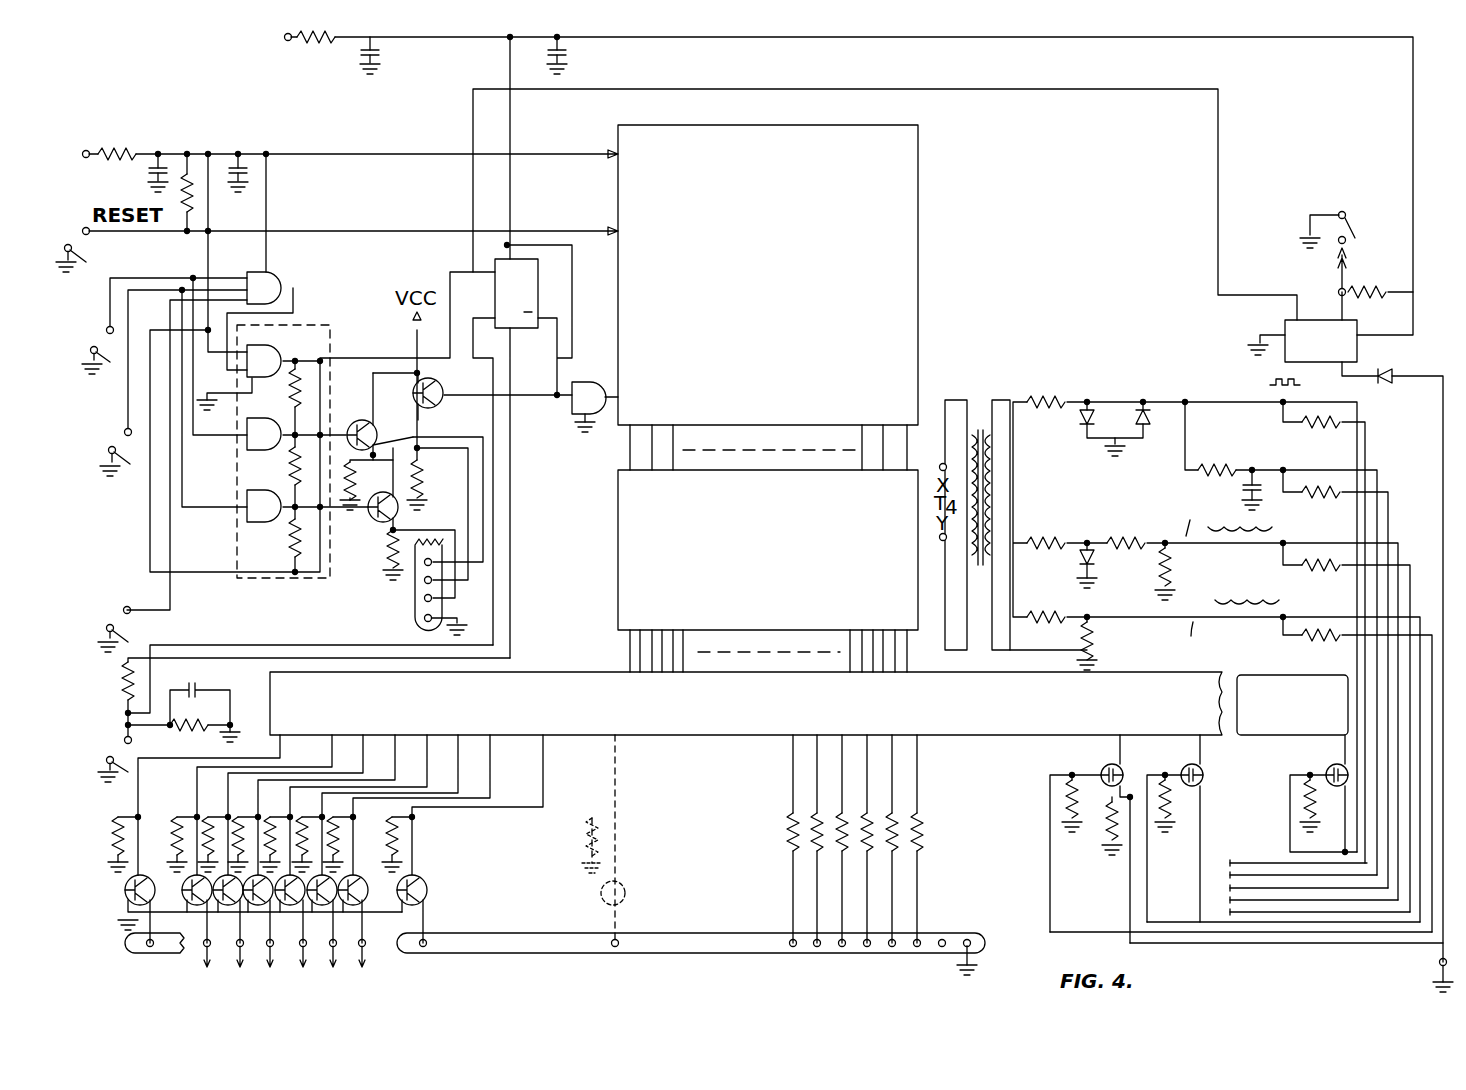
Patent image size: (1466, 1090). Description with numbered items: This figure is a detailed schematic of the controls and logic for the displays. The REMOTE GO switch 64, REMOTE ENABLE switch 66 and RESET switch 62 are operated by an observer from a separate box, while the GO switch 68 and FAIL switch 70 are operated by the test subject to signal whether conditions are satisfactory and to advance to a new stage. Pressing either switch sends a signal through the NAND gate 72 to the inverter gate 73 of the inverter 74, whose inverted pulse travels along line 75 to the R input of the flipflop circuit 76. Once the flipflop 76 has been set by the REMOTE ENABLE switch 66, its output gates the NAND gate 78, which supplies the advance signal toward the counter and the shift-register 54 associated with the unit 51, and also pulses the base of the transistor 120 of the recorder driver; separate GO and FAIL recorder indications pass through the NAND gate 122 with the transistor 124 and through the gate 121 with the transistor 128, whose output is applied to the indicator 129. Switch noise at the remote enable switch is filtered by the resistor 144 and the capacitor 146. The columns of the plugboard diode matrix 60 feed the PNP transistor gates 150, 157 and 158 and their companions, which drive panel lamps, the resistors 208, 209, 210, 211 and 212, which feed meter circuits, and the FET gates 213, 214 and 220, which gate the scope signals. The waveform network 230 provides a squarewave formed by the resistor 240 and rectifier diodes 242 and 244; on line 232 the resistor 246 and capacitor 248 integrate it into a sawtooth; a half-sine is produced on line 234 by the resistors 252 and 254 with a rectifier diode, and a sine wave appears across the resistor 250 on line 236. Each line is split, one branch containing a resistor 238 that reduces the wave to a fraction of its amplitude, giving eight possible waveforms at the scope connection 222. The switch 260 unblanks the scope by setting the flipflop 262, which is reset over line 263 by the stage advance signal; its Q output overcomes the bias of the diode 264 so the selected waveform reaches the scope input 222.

The processor unit 51 is at (912, 144).
The shift-register 54 is at (618, 508).
The plugboard matrix 60 is at (809, 703).
The RESET switch 62 is at (82, 254).
The REMOTE GO switch 64 is at (140, 628).
The REMOTE ENABLE switch 66 is at (110, 757).
The GO switch 68 is at (102, 346).
The FAIL switch 70 is at (118, 438).
The NAND gate 72 is at (245, 265).
The inverter gate 73 is at (285, 345).
The inverter 74 is at (259, 430).
The line 75 is at (365, 355).
The flipflop circuit 76 is at (540, 285).
The NAND gate 78 is at (587, 378).
The transistor 120 is at (443, 382).
The AND gate 121 is at (270, 524).
The NAND gate 122 is at (270, 452).
The transistor 124 is at (365, 418).
The transistor 128 is at (375, 522).
The indicator relay 129 is at (414, 603).
The resistor 144 is at (196, 738).
The capacitor 146 is at (196, 683).
The PNP transistor gate 150 is at (124, 886).
The PNP transistor gate 157 is at (426, 880).
The PNP transistor gate 158 is at (628, 880).
The resistor 208 is at (790, 835).
The resistor 209 is at (812, 845).
The resistor 210 is at (848, 820).
The resistor 211 is at (868, 848).
The resistor 212 is at (904, 840).
The FET gate 213 is at (1098, 766).
The FET gate 214 is at (1181, 766).
The FET gate 220 is at (1325, 766).
The scope connection 222 is at (1432, 964).
The line 230 is at (1222, 647).
The line 232 is at (1188, 425).
The line 234 is at (1229, 514).
The line 236 is at (1235, 623).
The resistor 238 is at (1310, 460).
The resistor 240 is at (1040, 390).
The rectifier diode 242 is at (1075, 425).
The rectifier diode 244 is at (1150, 420).
The resistor 246 is at (1225, 460).
The capacitor 248 is at (1244, 483).
The resistor 250 is at (1058, 596).
The resistor 252 is at (1068, 525).
The resistor 254 is at (1130, 535).
The switch 260 is at (1346, 212).
The flipflop 262 is at (1279, 326).
The line 263 is at (471, 188).
The diode 264 is at (1392, 368).